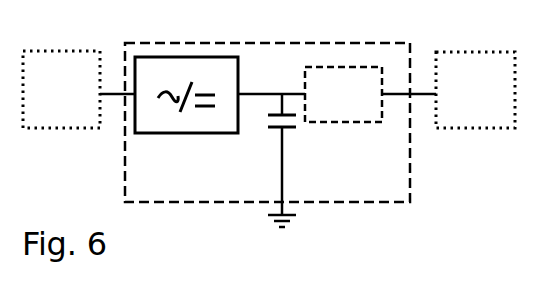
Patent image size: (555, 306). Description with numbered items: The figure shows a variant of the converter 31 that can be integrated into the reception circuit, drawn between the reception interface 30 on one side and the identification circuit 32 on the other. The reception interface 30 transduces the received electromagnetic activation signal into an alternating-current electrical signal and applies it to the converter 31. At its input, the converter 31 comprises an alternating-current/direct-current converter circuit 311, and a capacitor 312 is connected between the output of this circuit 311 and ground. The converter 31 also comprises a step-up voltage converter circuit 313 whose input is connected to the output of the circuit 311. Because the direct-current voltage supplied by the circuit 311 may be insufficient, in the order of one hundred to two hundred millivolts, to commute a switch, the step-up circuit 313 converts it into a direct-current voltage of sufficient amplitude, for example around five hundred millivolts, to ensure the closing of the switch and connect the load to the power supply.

The reception interface 30 is at (46, 104).
The AC/DC converter 31 is at (266, 40).
The alternating-current/direct-current converter circuit 311 is at (187, 135).
The capacitor 312 is at (290, 125).
The step-up voltage converter circuit 313 is at (322, 109).
The identification circuit 32 is at (460, 105).